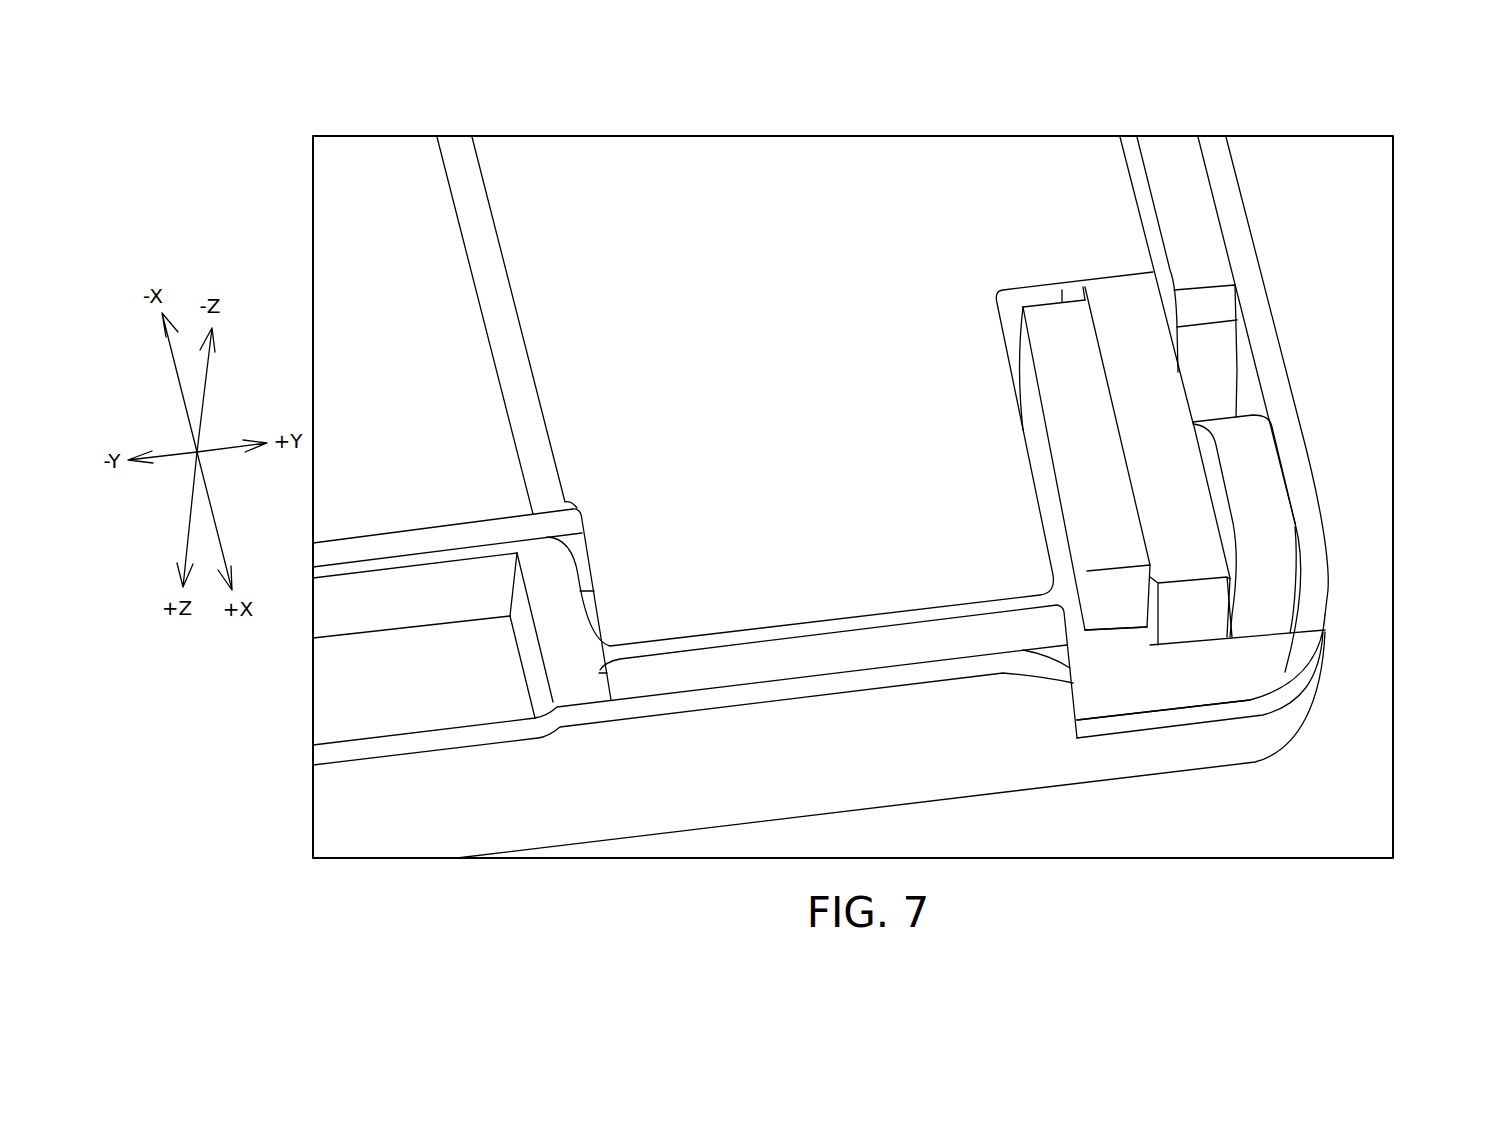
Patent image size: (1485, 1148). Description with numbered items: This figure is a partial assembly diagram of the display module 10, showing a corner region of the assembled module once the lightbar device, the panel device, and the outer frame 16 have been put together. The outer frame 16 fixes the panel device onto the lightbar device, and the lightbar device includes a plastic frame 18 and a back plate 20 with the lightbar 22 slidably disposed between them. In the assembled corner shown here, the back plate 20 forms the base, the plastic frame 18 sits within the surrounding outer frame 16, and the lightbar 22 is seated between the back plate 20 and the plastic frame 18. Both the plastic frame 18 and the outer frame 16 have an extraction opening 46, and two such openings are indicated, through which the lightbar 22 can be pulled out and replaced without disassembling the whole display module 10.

The display module 10 is at (315, 96).
The outer frame 16 is at (347, 817).
The plastic frame 18 is at (1263, 487).
The back plate 20 is at (697, 153).
The lightbar 22 is at (1150, 385).
The extraction opening 46 is at (1120, 656).